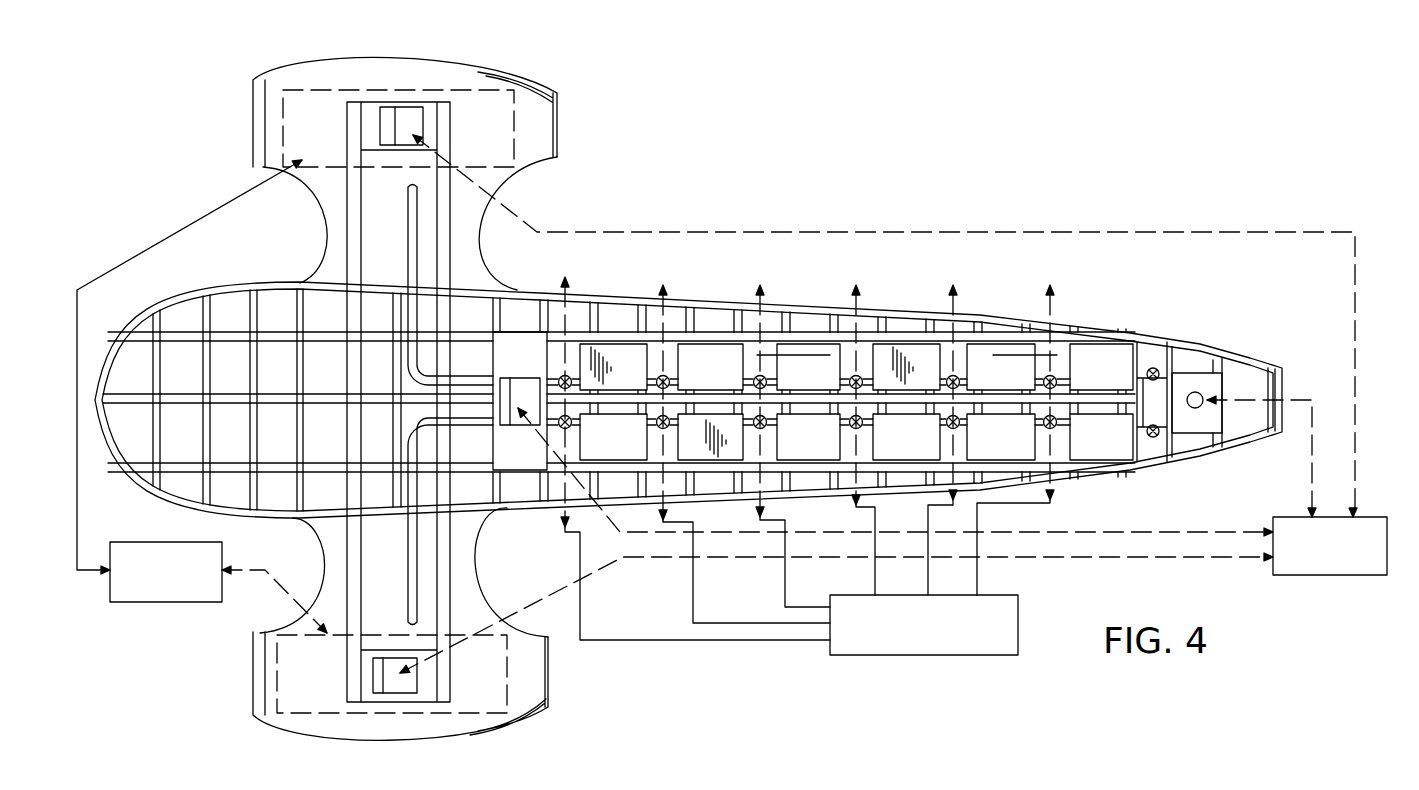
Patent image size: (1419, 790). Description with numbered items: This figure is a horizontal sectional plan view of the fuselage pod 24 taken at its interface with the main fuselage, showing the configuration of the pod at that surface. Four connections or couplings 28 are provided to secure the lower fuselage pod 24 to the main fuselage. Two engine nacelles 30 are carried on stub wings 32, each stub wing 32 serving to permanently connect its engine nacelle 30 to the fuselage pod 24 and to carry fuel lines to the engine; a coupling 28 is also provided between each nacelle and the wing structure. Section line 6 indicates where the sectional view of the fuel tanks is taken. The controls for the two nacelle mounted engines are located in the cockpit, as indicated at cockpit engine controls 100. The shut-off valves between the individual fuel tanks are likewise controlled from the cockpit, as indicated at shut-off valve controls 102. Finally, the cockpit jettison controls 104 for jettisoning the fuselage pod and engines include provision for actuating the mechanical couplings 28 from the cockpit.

The fuselage pod 24 is at (170, 300).
The coupling 28 is at (385, 122).
The engine nacelle 30 is at (490, 66).
The stub wing 32 is at (327, 238).
The section line 6- 6 is at (809, 398).
The cockpit engine controls 100 is at (180, 602).
The cockpit shut-off valve controls 102 is at (1018, 600).
The cockpit jettison controls 104 is at (1338, 576).